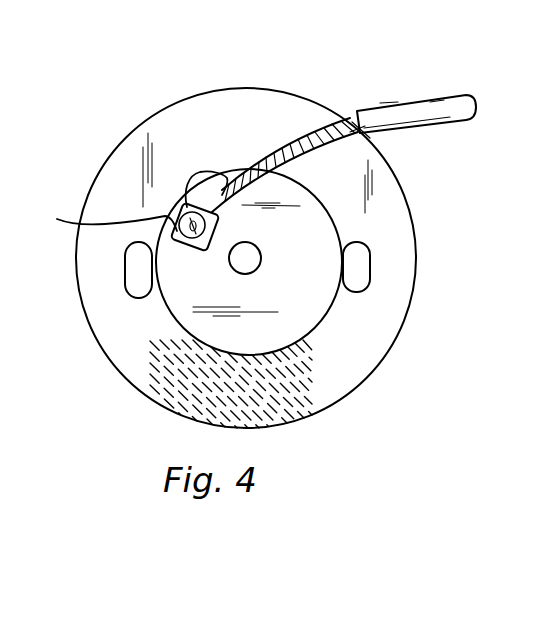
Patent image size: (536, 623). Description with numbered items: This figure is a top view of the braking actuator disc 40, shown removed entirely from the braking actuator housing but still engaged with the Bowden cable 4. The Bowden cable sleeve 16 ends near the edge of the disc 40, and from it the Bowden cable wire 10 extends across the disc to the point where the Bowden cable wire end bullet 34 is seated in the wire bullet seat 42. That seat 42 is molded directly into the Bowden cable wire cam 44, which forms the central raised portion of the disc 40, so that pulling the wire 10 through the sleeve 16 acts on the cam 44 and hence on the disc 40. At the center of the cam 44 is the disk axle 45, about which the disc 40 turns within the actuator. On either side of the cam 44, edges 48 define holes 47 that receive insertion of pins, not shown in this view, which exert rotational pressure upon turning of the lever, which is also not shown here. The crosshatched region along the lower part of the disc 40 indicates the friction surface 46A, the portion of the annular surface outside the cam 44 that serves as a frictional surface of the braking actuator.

The Bowden cable 4 is at (413, 75).
The Bowden cable wire 10 is at (290, 141).
The Bowden cable sleeve 16 is at (378, 100).
The Bowden cable wire end bullet 34 is at (187, 206).
The disc 40 is at (130, 153).
The wire bullet seat 42 is at (102, 220).
The Bowden cable wire cam 44 is at (175, 292).
The disk axle 45 is at (248, 259).
The friction surface 46A is at (207, 380).
The holes 47 is at (130, 279).
The edges 48 is at (368, 273).